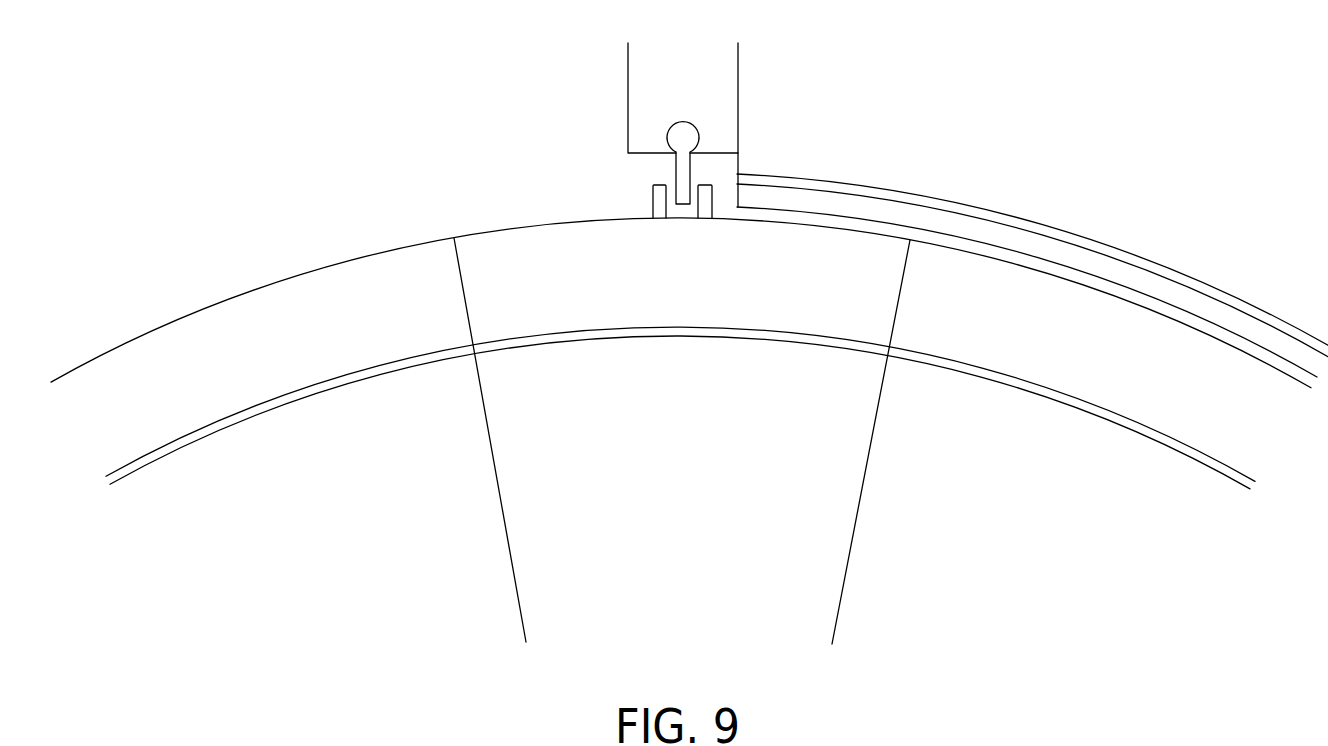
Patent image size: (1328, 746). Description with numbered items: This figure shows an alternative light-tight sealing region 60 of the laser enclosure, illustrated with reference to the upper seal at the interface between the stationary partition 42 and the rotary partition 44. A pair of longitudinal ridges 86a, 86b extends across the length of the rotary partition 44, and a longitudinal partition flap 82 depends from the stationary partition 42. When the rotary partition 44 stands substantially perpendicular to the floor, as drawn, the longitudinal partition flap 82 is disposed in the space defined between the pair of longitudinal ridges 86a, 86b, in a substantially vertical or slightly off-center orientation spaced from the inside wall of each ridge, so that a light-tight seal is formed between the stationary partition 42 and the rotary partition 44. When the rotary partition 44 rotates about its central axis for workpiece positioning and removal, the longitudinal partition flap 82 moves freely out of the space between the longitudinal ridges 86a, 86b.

The light-tight sealing region 60 is at (420, 89).
The stationary partition 42 is at (726, 114).
The longitudinal partition flap 82 is at (680, 163).
The longitudinal ridge 86a is at (660, 219).
The longitudinal ridge 86b is at (703, 219).
The rotary partition 44 is at (852, 530).